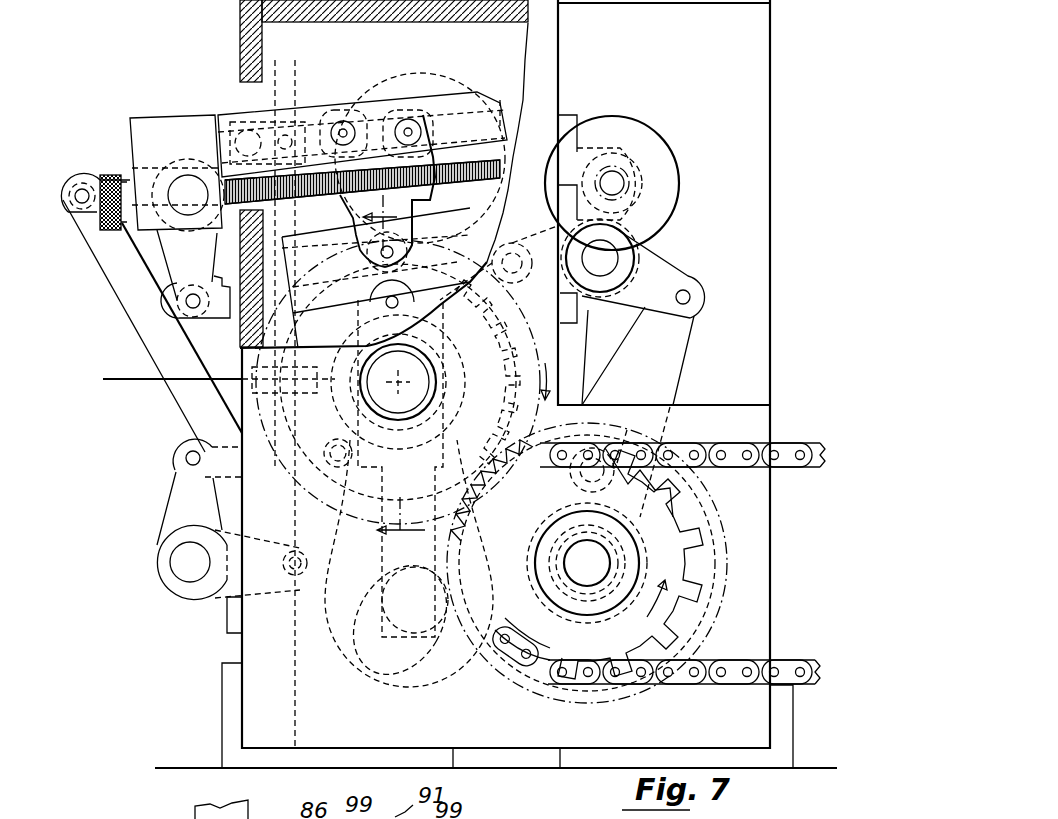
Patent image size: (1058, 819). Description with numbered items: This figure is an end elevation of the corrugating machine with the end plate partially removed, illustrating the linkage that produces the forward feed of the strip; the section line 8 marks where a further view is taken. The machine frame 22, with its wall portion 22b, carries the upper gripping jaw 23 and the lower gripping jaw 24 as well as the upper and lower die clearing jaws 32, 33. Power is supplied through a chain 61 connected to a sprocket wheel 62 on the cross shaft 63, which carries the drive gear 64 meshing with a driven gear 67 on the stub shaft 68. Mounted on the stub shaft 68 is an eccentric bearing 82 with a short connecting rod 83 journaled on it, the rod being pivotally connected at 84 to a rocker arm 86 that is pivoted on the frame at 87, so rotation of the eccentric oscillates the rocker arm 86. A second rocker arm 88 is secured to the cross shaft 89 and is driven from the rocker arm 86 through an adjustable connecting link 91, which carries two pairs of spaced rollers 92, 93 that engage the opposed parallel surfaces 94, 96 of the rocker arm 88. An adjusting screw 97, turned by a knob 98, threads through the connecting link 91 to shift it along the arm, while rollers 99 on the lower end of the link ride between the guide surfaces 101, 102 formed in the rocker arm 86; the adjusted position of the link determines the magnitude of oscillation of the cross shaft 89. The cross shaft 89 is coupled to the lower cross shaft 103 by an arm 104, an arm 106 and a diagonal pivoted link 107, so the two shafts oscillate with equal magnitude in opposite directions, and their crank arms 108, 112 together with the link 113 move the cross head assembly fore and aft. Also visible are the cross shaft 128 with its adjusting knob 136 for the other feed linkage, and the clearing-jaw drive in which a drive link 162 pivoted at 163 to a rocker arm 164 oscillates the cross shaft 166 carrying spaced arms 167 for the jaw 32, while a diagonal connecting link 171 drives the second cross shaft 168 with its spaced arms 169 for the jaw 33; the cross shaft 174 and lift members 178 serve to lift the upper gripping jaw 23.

The frame 22 is at (774, 566).
The frame wall portion 22b is at (265, 42).
The upper gripping jaw 23 is at (246, 357).
The lower gripping jaw 24 is at (232, 415).
The upper die clearing jaw 32 is at (520, 325).
The lower die clearing jaw 33 is at (400, 382).
The chain 61 is at (790, 443).
The sprocket wheel 62 is at (605, 649).
The cross shaft 63 is at (608, 565).
The drive gear 64 is at (717, 510).
The driven gear 67 is at (309, 543).
The stub shaft 68 is at (410, 394).
The eccentric bearing 82 is at (409, 495).
The connecting rod 83 is at (365, 342).
The pivot 84 is at (398, 298).
The rocker arm 86 is at (447, 215).
The pivot axis 87 is at (510, 240).
The second rocker arm 88 is at (232, 108).
The cross shaft 89 is at (183, 182).
The connecting link 91 is at (345, 205).
The rollers 92 is at (333, 115).
The rollers 93 is at (437, 100).
The parallel surface 94 is at (500, 100).
The parallel surface 96 is at (510, 136).
The adjusting screw 97 is at (222, 248).
The knob 98 is at (108, 175).
The rollers 99 is at (405, 244).
The guide surface 101 is at (376, 278).
The guide surface 102 is at (345, 268).
The lower cross shaft 103 is at (178, 560).
The arm 104 is at (92, 212).
The arm 106 is at (226, 608).
The pivoted link 107 is at (143, 320).
The crank arm 108 is at (173, 276).
The crank arm 112 is at (183, 505).
The link 113 is at (190, 435).
The cross shaft 128 is at (618, 183).
The adjusting knob 136 is at (678, 175).
The drive link 162 is at (680, 370).
The pivot 163 is at (692, 300).
The rocker arm 164 is at (683, 276).
The cross shaft 166 is at (632, 255).
The spaced arms 167 is at (588, 310).
The second cross shaft 168 is at (621, 482).
The spaced arms 169 is at (492, 490).
The diagonal connecting link 171 is at (612, 345).
The cross shaft 174 is at (176, 167).
The lift members 178 is at (264, 115).
The section line 8 is at (394, 373).